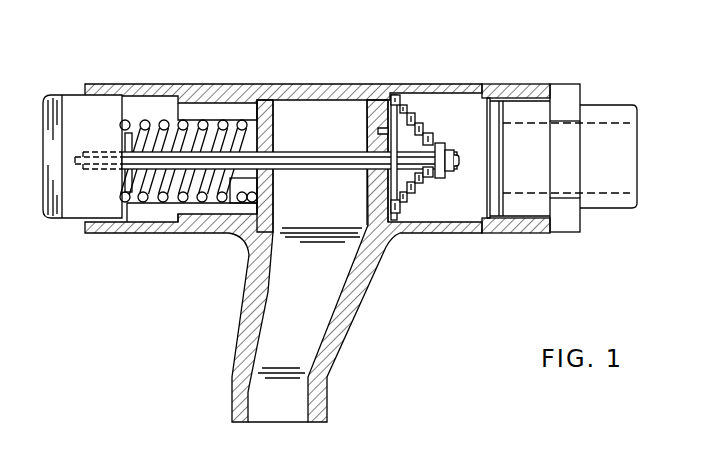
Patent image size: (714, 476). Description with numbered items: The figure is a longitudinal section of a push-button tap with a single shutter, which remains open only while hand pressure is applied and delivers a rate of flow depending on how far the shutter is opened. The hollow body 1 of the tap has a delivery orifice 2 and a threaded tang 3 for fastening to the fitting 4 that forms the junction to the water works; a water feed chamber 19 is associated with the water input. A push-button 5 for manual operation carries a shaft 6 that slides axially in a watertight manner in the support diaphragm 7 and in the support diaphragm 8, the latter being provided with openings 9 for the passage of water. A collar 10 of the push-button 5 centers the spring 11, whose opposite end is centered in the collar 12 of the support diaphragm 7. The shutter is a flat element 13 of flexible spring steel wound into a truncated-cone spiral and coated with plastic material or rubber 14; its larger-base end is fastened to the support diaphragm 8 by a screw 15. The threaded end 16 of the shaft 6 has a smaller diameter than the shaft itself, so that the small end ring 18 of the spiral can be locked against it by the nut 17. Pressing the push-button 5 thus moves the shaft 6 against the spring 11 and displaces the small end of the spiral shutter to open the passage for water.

The hollow body 1 is at (318, 84).
The delivery orifice 2 is at (233, 404).
The threaded tang 3 is at (524, 84).
The fitting 4 is at (613, 208).
The push-button 5 is at (63, 123).
The shaft 6 is at (298, 152).
The support diaphragm 7 is at (280, 107).
The support diaphragm 8 is at (368, 197).
The openings 9 is at (367, 138).
The collar 10 is at (122, 147).
The spring 11 is at (165, 118).
The collar 12 is at (250, 176).
The flat element 13 is at (446, 146).
The plastic material or rubber coating 14 is at (430, 178).
The screw 15 is at (410, 93).
The threaded end 16 is at (458, 165).
The nut 17 is at (450, 145).
The small end ring 18 is at (452, 178).
The water feed chamber 19 is at (497, 150).